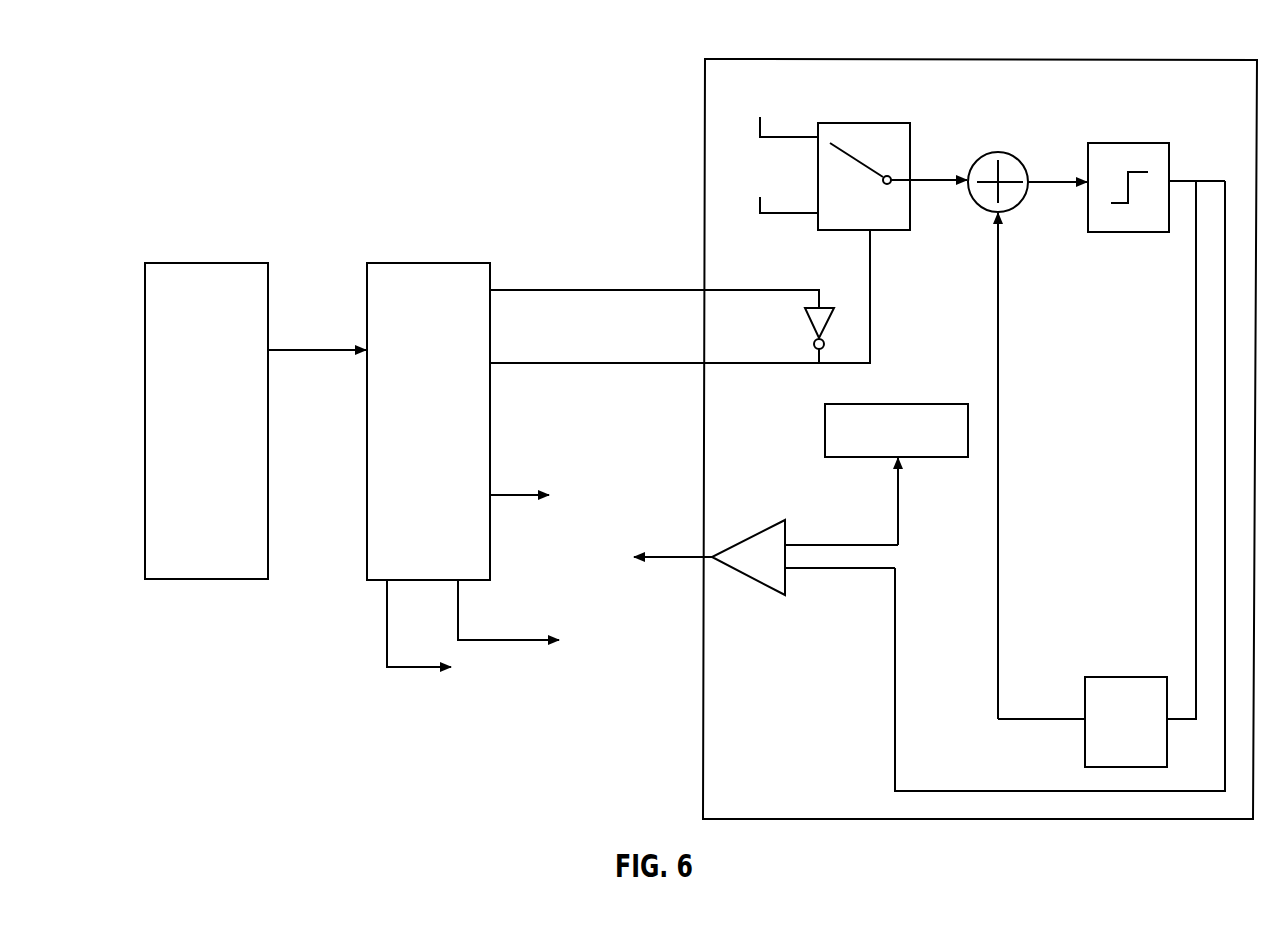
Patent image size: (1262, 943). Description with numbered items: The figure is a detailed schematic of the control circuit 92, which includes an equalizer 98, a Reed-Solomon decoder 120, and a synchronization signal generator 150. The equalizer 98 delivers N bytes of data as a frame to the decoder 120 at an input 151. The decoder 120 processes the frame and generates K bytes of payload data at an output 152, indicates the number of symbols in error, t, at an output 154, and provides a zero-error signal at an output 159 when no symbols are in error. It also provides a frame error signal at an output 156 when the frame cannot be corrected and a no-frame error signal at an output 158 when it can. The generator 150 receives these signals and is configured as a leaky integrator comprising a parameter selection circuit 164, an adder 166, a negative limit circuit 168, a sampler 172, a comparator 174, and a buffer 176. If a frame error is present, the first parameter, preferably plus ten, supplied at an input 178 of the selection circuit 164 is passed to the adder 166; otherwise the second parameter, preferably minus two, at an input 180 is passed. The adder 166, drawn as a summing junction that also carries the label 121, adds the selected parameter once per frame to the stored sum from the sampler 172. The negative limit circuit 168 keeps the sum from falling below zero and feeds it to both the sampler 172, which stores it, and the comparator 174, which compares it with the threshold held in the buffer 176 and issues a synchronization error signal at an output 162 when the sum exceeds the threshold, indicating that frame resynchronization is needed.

The control circuit 92 is at (832, 35).
The equalizer 98 is at (255, 263).
The Reed-Solomon decoder 120 is at (402, 263).
The summer 121 is at (1018, 161).
The synchronization signal generator 150 is at (1000, 59).
The input 151 is at (364, 346).
The output 152 is at (386, 582).
The output 154 is at (458, 582).
The output 156 is at (490, 288).
The output 158 is at (490, 363).
The output 159 is at (490, 492).
The output 162 is at (708, 557).
The parameter selection circuit 164 is at (890, 231).
The adder 166 is at (1012, 208).
The negative limit circuit 168 is at (1108, 233).
The sampler 172 is at (1125, 677).
The comparator 174 is at (755, 534).
The buffer 176 is at (903, 404).
The input 178 is at (818, 143).
The input 180 is at (818, 218).